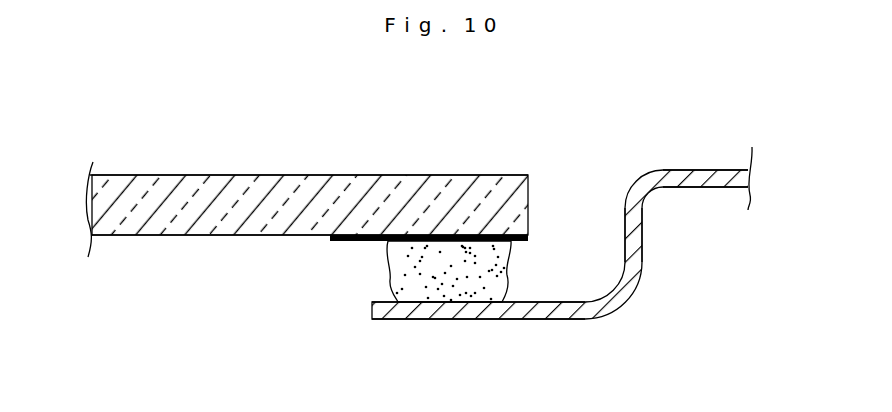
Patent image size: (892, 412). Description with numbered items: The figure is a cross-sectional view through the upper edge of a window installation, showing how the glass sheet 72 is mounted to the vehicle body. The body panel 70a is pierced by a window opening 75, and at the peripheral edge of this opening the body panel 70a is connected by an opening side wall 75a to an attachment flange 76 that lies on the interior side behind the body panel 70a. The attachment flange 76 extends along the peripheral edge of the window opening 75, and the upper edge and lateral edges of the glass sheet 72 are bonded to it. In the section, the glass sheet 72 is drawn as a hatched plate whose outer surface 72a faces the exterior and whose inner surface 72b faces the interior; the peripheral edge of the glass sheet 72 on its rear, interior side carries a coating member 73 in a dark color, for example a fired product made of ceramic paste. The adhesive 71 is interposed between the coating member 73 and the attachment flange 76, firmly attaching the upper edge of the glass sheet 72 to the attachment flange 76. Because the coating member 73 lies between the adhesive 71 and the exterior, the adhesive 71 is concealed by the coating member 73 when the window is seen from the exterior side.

The glass sheet 72 is at (195, 156).
The upper surface of plate 72a is at (269, 175).
The lower surface of plate 72b is at (213, 236).
The coating member 73 is at (525, 241).
The adhesive 71 is at (492, 278).
The window opening 75 is at (598, 176).
The opening side wall 75a is at (643, 239).
The body panel 70a is at (707, 170).
The attachment flange 76 is at (548, 320).